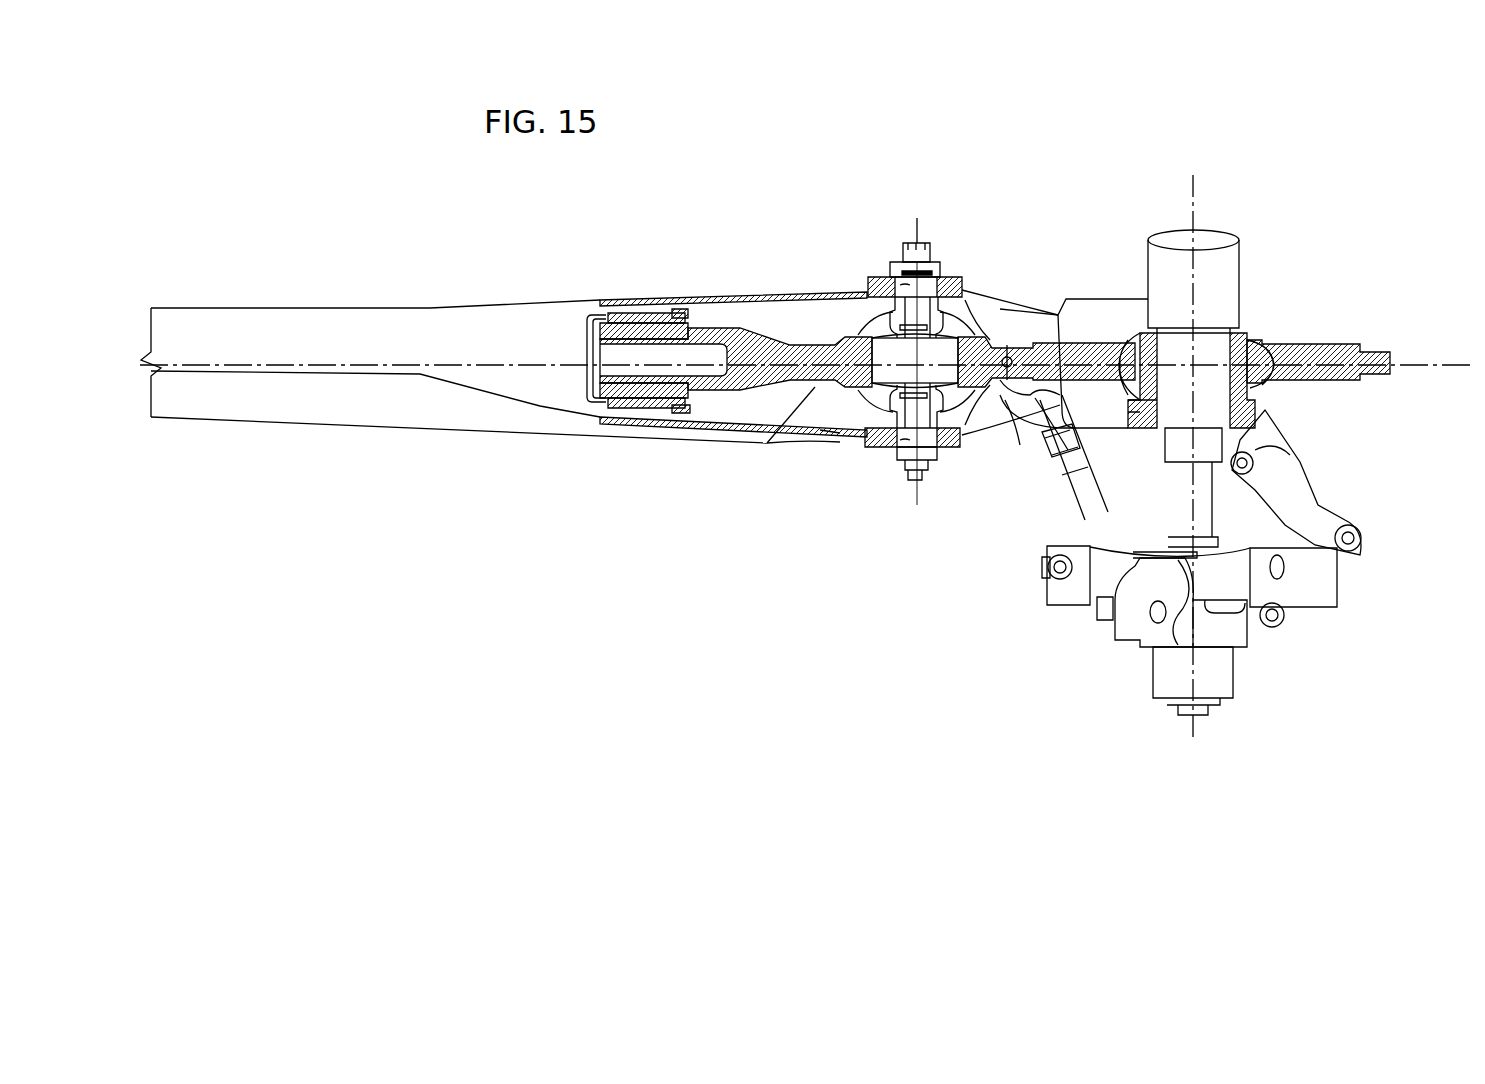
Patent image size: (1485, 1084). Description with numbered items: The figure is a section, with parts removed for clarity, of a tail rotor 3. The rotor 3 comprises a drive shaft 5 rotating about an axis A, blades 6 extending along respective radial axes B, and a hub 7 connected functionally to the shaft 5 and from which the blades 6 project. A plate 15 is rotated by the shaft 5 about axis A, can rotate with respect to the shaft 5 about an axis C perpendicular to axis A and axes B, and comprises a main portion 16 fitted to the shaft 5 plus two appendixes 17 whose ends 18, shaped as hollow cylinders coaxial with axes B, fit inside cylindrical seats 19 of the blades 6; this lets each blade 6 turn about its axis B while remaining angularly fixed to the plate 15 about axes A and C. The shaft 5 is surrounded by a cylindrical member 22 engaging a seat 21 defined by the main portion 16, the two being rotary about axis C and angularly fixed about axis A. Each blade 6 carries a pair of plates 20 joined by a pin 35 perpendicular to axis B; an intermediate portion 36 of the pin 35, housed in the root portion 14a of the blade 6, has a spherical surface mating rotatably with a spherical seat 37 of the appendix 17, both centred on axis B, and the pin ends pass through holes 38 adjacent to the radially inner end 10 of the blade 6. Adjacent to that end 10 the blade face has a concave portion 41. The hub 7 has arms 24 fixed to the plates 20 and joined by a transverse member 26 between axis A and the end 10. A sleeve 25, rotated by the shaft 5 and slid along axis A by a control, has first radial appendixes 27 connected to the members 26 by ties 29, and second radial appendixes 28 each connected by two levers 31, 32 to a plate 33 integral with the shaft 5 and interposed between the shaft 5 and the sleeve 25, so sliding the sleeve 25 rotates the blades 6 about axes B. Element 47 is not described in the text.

The rotor 3 is at (1296, 190).
The drive shaft 5 is at (1232, 255).
The blade 6 is at (487, 345).
The hub 7 is at (1287, 265).
The radially inner end 10 is at (803, 446).
The root portion 14a is at (708, 287).
The plate 15 is at (1320, 344).
The main portion 16 is at (1100, 338).
The appendix 17 is at (752, 325).
The end 18 is at (665, 333).
The seat 19 is at (620, 342).
The plate 20 is at (815, 290).
The seat 21 is at (1165, 340).
The cylindrical member 22 is at (1265, 390).
The arm 24 is at (975, 303).
The sleeve 25 is at (1212, 690).
The transverse member 26 is at (1020, 390).
The first radial appendix 27 is at (1058, 598).
The second radial appendix 28 is at (1125, 620).
The tie 29 is at (1075, 527).
The lever 31 is at (1290, 615).
The lever 32 is at (1310, 490).
The plate 33 is at (1135, 420).
The pin 35 is at (904, 426).
The intermediate portion 36 is at (868, 330).
The seat 37 is at (876, 350).
The hole 38 is at (926, 288).
The concave first portion 41 is at (770, 440).
The blade wall 47 is at (835, 436).
The axis A is at (1193, 190).
The axis B is at (302, 356).
The axis C is at (1195, 362).